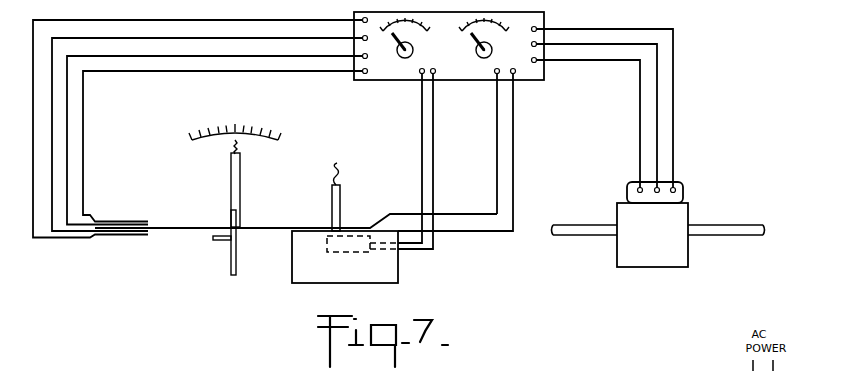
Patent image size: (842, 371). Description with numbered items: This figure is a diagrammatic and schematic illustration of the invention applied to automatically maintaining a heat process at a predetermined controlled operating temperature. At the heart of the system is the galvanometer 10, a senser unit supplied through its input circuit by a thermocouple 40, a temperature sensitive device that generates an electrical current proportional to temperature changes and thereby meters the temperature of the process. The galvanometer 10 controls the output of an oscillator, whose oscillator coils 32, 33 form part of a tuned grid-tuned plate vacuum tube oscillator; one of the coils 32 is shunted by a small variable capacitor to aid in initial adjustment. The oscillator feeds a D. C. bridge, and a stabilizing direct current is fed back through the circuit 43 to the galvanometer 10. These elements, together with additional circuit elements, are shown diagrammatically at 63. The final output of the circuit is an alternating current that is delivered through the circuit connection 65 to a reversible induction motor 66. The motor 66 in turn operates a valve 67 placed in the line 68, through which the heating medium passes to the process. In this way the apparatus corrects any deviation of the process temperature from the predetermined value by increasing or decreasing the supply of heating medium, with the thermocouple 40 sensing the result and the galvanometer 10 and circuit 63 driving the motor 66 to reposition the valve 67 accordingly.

The galvanometer 10 is at (316, 216).
The oscillator coil 32 is at (132, 222).
The oscillator coil 33 is at (131, 236).
The thermocouple 40 is at (349, 161).
The circuit 43 is at (508, 135).
The circuit elements 63 is at (463, 80).
The circuit connection 65 is at (660, 121).
The reversible induction motor 66 is at (681, 184).
The valve 67 is at (684, 267).
The line 68 is at (731, 236).